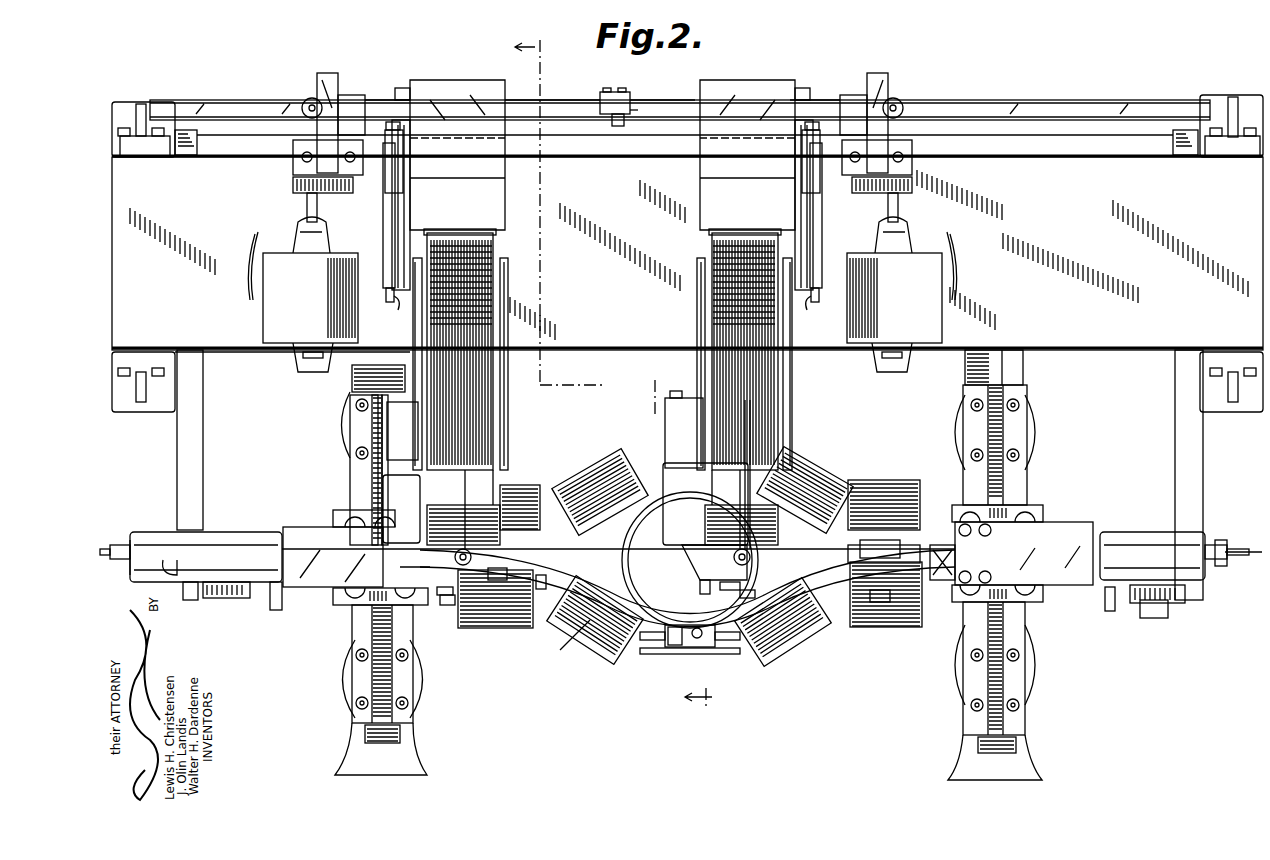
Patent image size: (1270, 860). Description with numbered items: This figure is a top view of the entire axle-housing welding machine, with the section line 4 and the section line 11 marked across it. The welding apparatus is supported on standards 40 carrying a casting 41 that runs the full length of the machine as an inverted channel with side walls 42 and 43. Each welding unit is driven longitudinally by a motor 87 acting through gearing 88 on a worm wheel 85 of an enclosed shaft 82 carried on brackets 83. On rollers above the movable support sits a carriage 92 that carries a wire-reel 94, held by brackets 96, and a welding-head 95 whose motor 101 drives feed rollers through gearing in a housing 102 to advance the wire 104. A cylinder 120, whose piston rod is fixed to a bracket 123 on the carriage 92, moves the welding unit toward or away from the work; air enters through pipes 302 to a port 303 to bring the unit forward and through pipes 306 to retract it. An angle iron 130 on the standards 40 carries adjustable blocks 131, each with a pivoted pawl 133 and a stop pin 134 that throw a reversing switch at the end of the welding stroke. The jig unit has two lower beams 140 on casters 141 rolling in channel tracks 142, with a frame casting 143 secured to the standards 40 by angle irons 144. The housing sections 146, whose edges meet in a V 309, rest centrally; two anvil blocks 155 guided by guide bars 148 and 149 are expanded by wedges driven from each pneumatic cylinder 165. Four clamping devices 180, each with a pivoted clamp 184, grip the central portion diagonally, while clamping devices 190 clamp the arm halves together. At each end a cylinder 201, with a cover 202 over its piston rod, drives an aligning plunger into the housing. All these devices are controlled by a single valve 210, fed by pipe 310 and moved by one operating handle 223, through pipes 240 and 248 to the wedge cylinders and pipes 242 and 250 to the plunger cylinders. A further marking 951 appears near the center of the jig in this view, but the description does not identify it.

The section line 4— 4 is at (622, 373).
The section line 11— 11 is at (842, 556).
The standards 40 is at (1232, 102).
The casting 41 is at (687, 253).
The side wall 42 is at (270, 352).
The side wall 43 is at (266, 154).
The enclosed shaft 82 is at (362, 105).
The brackets 83 is at (352, 100).
The worm wheel 85 is at (305, 97).
The motor 87 is at (602, 282).
The gearing 88 is at (330, 190).
The carriage 92 is at (485, 78).
The wire-reel 94 is at (496, 242).
The welding-head 95 is at (445, 605).
The brackets 96 is at (508, 298).
The motor 101 is at (395, 497).
The housing 102 is at (690, 445).
The wire 104 is at (500, 478).
The cylinder 120 is at (395, 218).
The bracket 123 is at (405, 88).
The angle iron 130 is at (218, 100).
The blocks 131 is at (622, 100).
The pawl 133 is at (612, 120).
The stop pin 134 is at (632, 112).
The lower beams 140 is at (372, 433).
The casters 141 is at (350, 425).
The channel tracks 142 is at (352, 382).
The frame casting 143 is at (1043, 510).
The angle irons 144 is at (206, 430).
The housing sections 146 is at (565, 566).
The guide bar 148 is at (675, 648).
The guide bar 149 is at (700, 648).
The anvil blocks 155 is at (600, 640).
The pneumatic cylinder 165 is at (140, 545).
The clamping devices 180 is at (605, 462).
The clamp 184 is at (497, 580).
The clamping devices 190 is at (505, 485).
The cylinder 201 is at (667, 557).
The cover 202 is at (328, 588).
The valve 210 is at (672, 650).
The operating handle 223 is at (740, 654).
The pipes 240 is at (205, 602).
The pipes 242 is at (172, 560).
The pipes 248 is at (106, 549).
The pipes 250 is at (280, 612).
The pipes 302 is at (403, 165).
The port 303 is at (395, 126).
The pipes 306 is at (392, 306).
The V 309 is at (540, 590).
The pipe 310 is at (745, 640).
The cam follower 951 is at (705, 592).